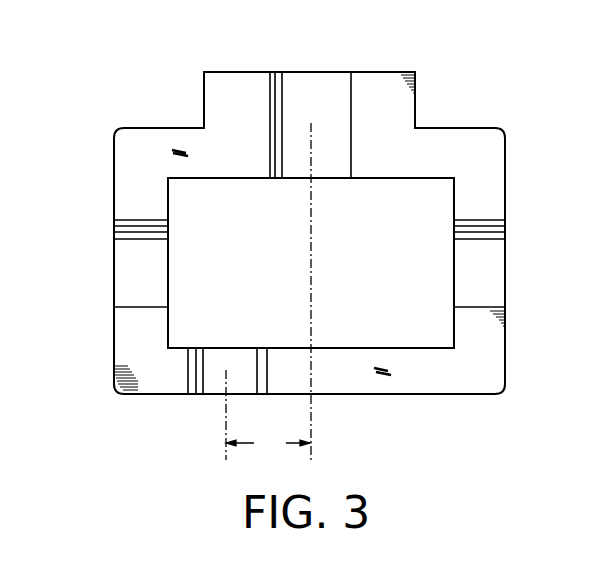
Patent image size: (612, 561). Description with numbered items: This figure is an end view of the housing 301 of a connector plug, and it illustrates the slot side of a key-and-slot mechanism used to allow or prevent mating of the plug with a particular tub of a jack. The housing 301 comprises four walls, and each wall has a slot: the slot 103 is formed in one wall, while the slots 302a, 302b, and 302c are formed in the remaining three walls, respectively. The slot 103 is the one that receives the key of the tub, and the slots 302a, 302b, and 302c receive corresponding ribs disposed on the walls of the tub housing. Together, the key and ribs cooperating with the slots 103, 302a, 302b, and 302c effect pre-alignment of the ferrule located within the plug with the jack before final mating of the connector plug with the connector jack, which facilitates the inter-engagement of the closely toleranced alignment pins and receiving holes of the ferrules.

The housing 301 is at (495, 152).
The slot 302a is at (465, 290).
The slot 302b is at (125, 290).
The slot 302c is at (323, 87).
The slot 103 is at (243, 357).